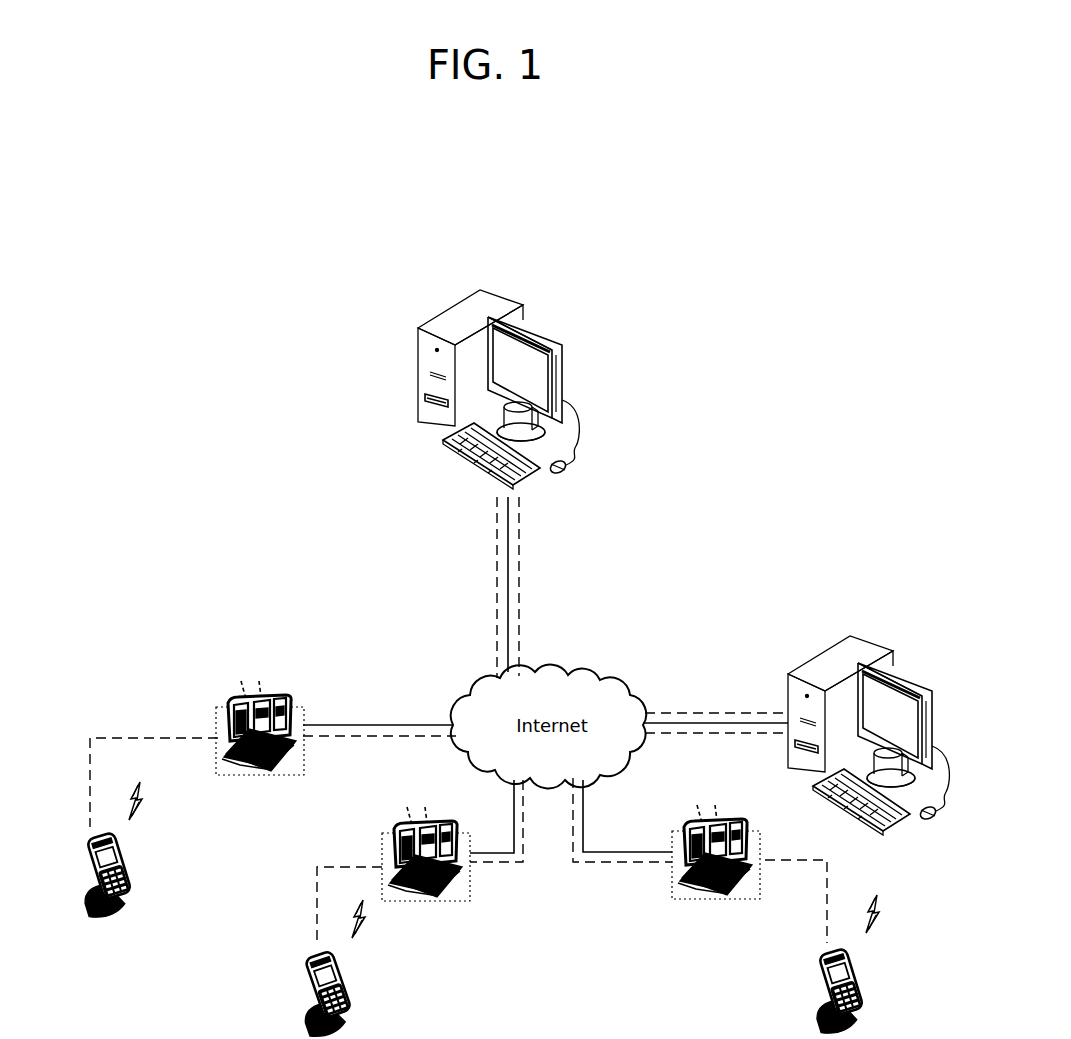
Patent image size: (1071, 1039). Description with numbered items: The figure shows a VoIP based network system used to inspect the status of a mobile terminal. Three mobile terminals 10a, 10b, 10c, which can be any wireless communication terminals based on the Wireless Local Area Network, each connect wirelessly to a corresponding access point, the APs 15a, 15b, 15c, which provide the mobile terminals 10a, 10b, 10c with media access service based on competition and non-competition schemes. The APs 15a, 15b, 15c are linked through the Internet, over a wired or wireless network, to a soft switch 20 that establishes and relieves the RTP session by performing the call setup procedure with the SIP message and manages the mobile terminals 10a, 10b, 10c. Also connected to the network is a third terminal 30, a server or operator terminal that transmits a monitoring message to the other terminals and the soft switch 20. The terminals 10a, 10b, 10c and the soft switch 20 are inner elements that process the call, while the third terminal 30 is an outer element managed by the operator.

The third terminal 30 is at (495, 300).
The soft switch 20 is at (865, 648).
The AP 15a is at (302, 707).
The AP 15b is at (463, 890).
The AP 15c is at (680, 887).
The mobile terminal 10a is at (125, 887).
The mobile terminal 10b is at (365, 1012).
The mobile terminal 10c is at (862, 1002).